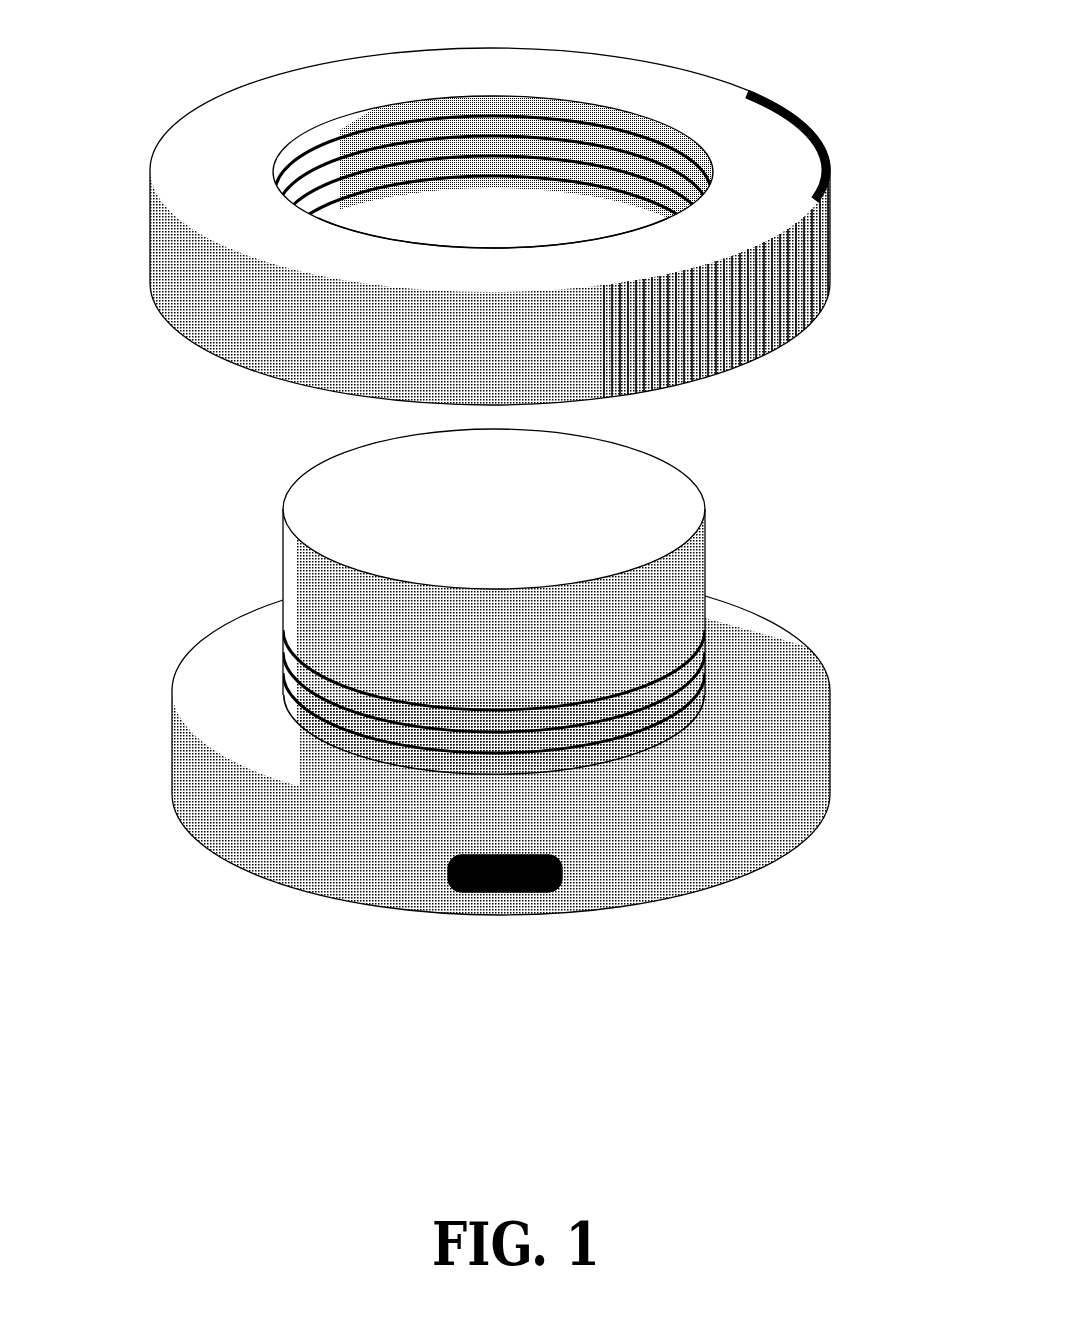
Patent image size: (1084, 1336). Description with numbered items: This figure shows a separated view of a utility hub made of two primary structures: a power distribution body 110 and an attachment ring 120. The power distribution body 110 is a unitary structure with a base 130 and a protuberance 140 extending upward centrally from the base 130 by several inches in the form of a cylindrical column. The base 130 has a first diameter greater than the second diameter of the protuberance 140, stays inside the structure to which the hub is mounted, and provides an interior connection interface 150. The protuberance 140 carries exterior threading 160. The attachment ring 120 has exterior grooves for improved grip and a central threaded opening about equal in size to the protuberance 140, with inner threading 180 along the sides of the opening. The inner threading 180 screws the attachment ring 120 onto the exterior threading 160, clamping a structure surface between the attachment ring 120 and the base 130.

The power distribution body 110 is at (230, 543).
The attachment ring 120 is at (673, 73).
The base 130 is at (765, 800).
The protuberance 140 is at (669, 596).
The interior connection interface 150 is at (522, 883).
The exterior threading 160 is at (692, 674).
The inner threading 180 is at (383, 165).